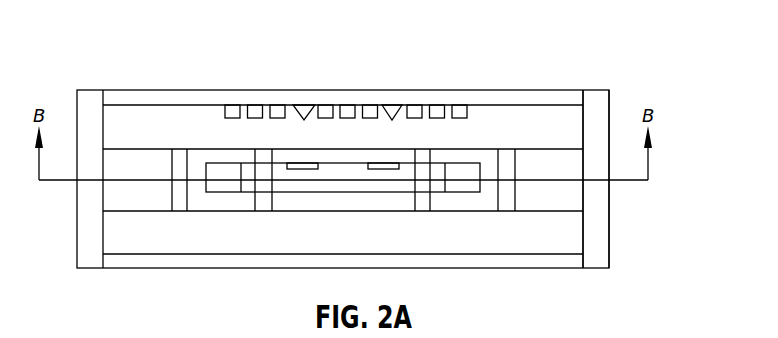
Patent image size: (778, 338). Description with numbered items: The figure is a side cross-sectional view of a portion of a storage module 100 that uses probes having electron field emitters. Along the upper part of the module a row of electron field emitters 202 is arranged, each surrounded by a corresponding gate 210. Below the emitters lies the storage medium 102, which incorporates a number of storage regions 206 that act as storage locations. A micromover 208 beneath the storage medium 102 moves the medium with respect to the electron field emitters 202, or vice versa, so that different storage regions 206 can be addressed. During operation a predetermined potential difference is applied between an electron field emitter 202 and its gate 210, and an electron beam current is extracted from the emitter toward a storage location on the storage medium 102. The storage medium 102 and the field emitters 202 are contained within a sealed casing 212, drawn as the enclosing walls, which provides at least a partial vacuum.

The storage module 100 is at (132, 48).
The storage medium 102 is at (215, 192).
The electron field emitter 202 is at (397, 113).
The storage region 206 is at (377, 163).
The micromover 208 is at (135, 211).
The gate 210 is at (372, 112).
The sealed casing 212 is at (598, 235).